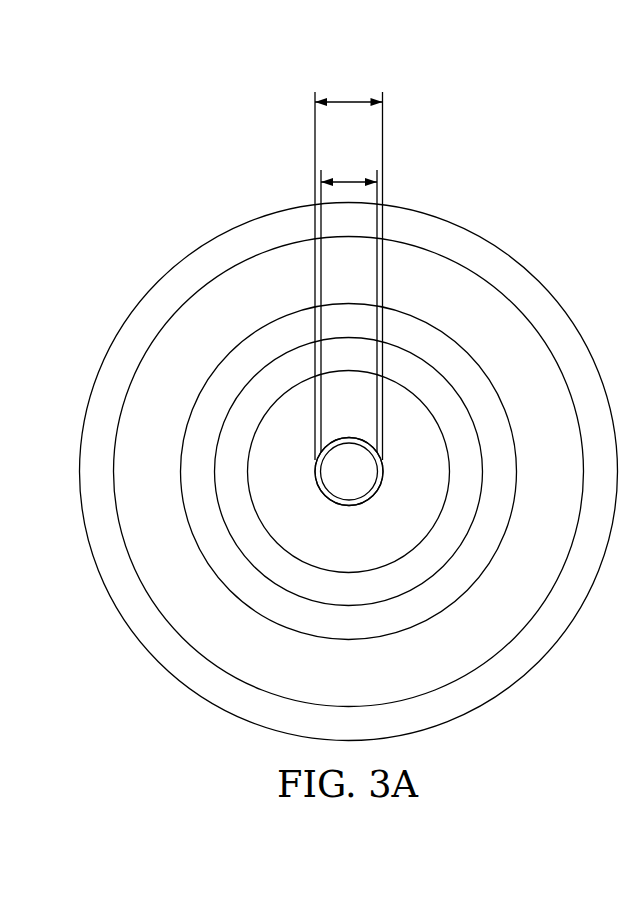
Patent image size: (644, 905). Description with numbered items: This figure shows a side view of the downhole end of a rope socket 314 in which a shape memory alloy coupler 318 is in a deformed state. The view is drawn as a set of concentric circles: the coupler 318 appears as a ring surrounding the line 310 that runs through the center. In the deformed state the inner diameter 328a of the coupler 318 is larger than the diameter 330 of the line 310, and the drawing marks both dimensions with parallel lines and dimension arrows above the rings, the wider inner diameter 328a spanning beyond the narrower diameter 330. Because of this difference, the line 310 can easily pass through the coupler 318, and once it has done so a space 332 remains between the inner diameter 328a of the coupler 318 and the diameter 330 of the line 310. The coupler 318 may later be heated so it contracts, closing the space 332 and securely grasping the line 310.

The substrate / wafer 314 is at (220, 195).
The coupler 318 is at (402, 405).
The line 310 is at (332, 475).
The space 332 is at (345, 505).
The inner diameter 328a is at (352, 101).
The diameter 330 is at (355, 180).